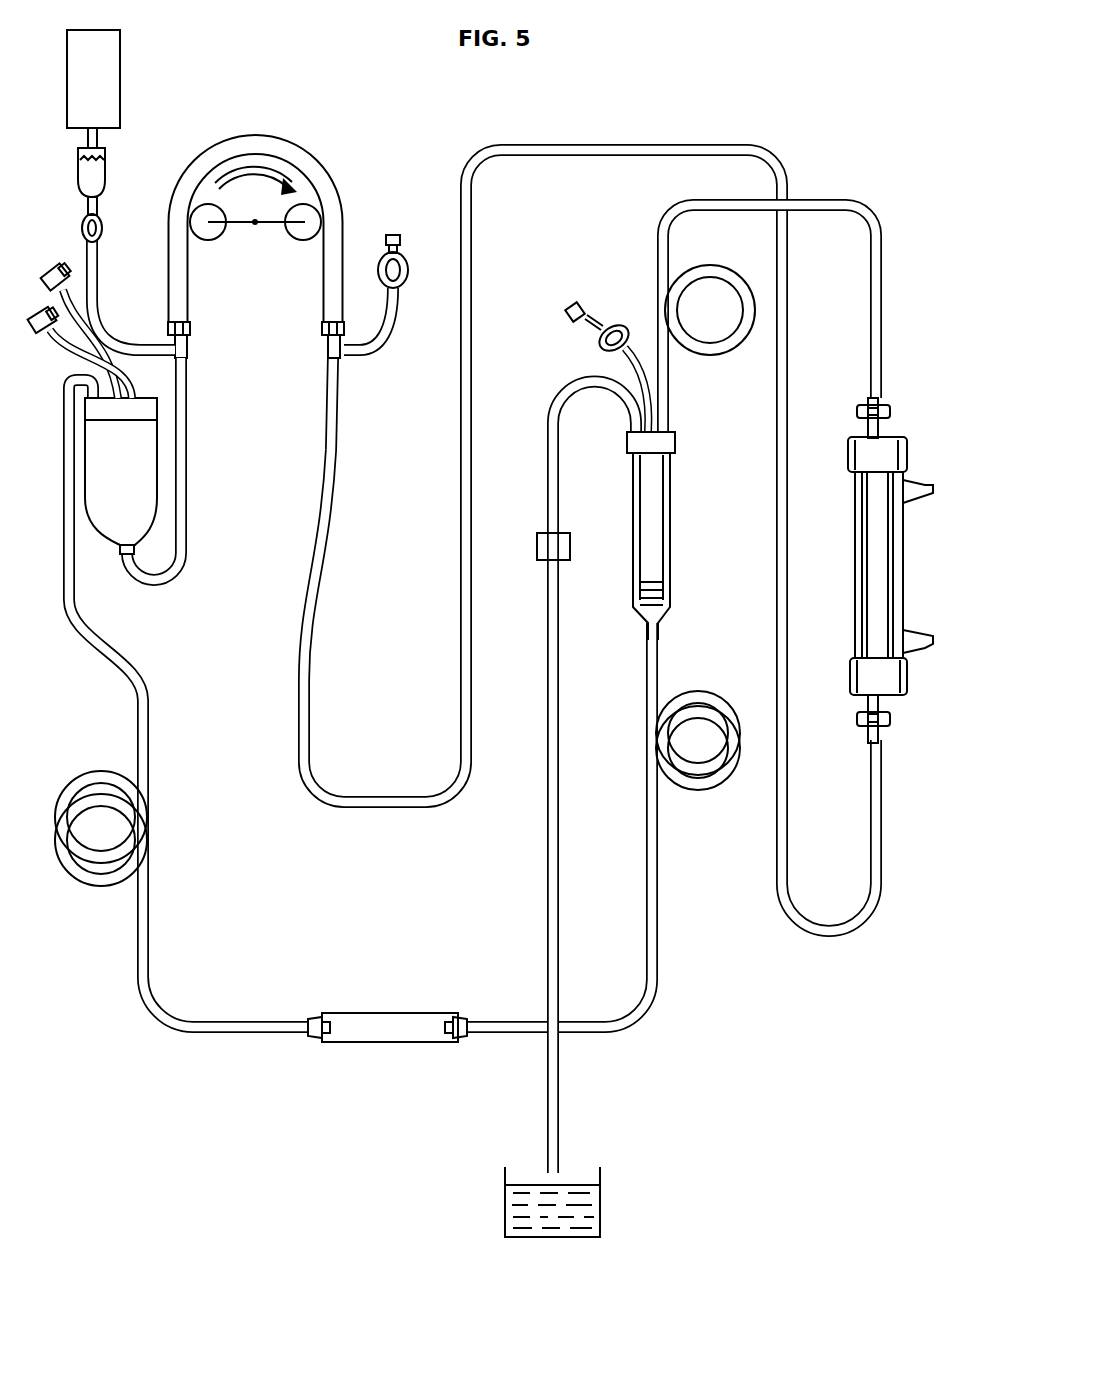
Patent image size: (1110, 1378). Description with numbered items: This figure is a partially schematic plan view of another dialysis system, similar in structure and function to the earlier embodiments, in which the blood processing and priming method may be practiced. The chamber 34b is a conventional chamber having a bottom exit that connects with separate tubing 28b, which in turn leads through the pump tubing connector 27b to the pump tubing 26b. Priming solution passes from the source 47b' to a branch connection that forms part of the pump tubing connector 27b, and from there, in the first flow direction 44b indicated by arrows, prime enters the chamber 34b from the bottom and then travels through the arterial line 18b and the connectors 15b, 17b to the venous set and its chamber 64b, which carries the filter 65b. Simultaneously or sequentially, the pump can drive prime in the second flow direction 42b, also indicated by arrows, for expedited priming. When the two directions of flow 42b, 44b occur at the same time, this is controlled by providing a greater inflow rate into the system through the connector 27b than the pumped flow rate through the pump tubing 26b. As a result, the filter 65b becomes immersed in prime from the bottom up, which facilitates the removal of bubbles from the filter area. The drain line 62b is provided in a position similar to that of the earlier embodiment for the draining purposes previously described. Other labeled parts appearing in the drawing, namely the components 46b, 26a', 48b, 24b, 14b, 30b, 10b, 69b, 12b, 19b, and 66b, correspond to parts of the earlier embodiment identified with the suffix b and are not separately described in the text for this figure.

The infusion fluid container 47b' is at (130, 77).
The infusion line 46b is at (97, 205).
The second flow direction 42b is at (247, 163).
The pump tubing 26b is at (292, 136).
The pump rollers 26a' is at (295, 177).
The pump tubing connector 27b is at (192, 328).
The chamber 34b is at (147, 435).
The separate tubing 28b is at (187, 473).
The connector 48b is at (327, 338).
The sampling port 24b is at (373, 345).
The venous blood line 14b is at (650, 220).
The tubing loop 30b is at (461, 476).
The extracorporeal blood circuit 10b is at (298, 576).
The chamber 64b is at (673, 483).
The filter 65b is at (660, 593).
The clamp 69b is at (570, 546).
The dialyzer 12b is at (848, 597).
The arterial line 18b is at (148, 740).
The first flow direction 44b is at (165, 925).
The drain line 62b is at (547, 818).
The connector 15b is at (315, 1017).
The heater/filter 19b is at (400, 1012).
The connector 17b is at (458, 1018).
The collection container 66b is at (600, 1200).